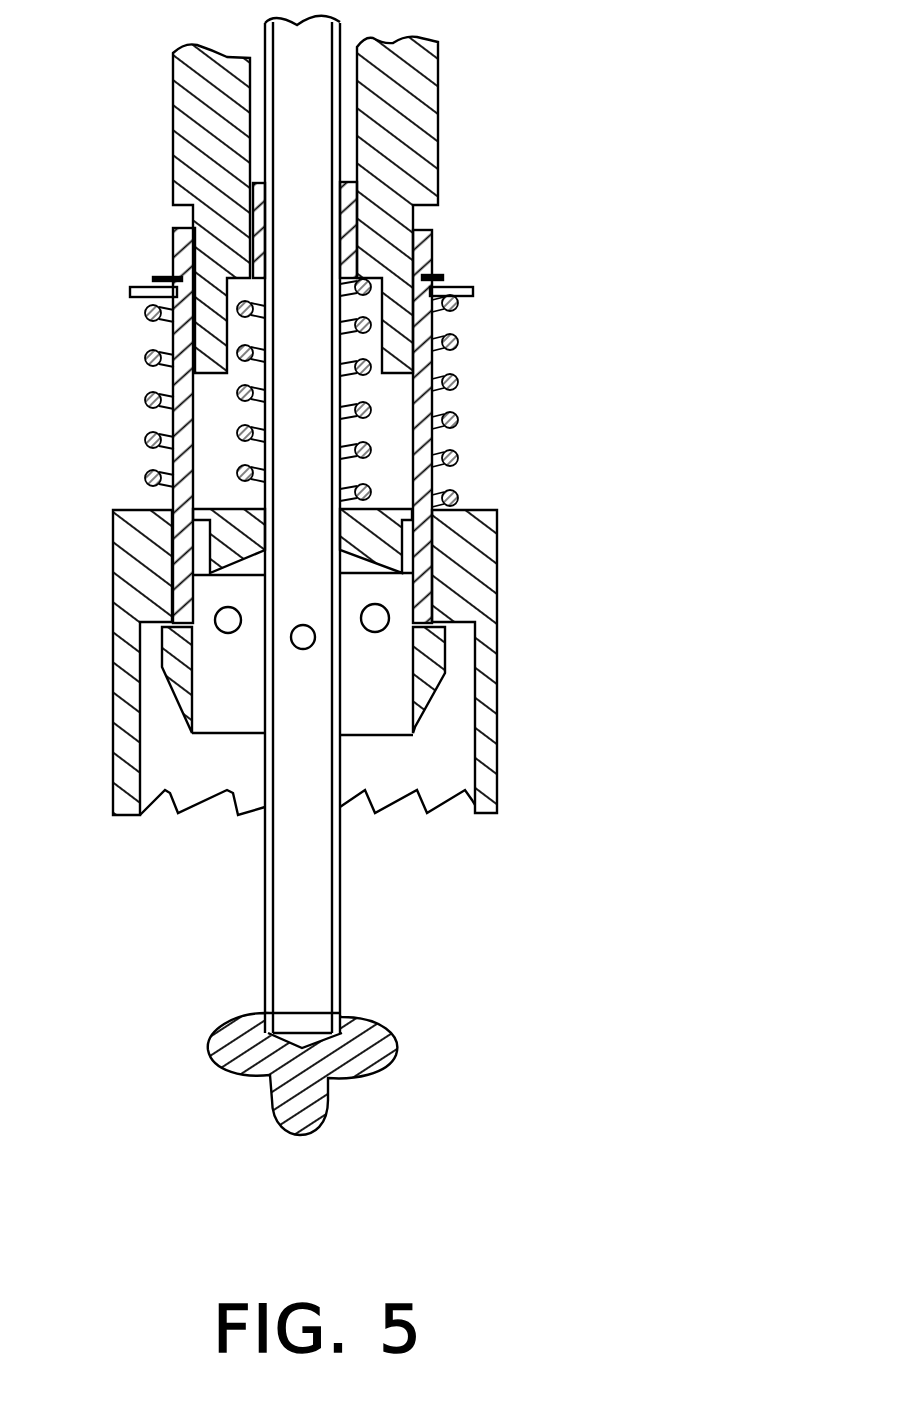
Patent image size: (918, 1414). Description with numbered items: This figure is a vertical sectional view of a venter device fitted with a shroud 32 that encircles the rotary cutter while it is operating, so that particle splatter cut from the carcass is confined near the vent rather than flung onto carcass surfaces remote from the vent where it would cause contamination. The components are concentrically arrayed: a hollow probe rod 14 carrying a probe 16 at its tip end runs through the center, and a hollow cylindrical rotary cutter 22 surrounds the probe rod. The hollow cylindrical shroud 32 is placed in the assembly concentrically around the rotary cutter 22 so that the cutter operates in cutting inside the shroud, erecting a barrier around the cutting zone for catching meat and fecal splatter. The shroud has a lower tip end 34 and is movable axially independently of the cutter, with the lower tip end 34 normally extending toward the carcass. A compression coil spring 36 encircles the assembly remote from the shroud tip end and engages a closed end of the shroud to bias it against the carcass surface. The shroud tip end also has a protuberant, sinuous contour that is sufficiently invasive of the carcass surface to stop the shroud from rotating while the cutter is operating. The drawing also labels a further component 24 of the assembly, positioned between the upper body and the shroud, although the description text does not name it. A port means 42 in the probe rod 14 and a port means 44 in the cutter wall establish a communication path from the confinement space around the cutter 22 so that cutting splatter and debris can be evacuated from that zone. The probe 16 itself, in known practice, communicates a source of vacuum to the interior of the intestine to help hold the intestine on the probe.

The hollow probe rod 14 is at (305, 283).
The probe 16 is at (318, 1133).
The hollow cylindrical rotary cutter 22 is at (420, 708).
The sleeve 24 is at (212, 523).
The shroud 32 is at (497, 695).
The lower tip end of shroud 34 is at (377, 815).
The compression coil spring 36 is at (455, 425).
The port means in the probe rod 42 is at (303, 637).
The port means in the cutter wall 44 is at (228, 620).